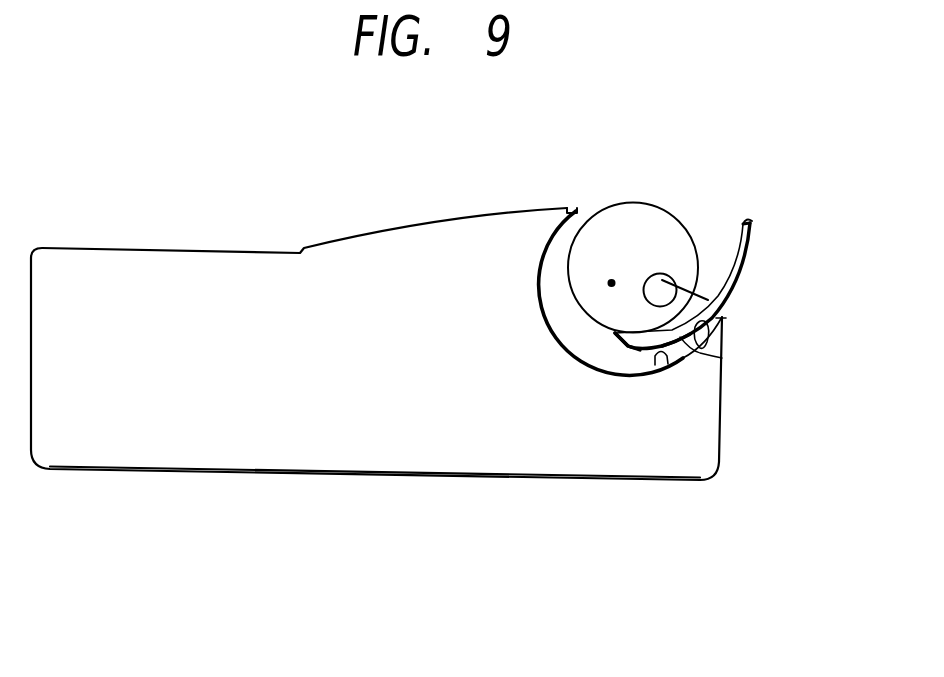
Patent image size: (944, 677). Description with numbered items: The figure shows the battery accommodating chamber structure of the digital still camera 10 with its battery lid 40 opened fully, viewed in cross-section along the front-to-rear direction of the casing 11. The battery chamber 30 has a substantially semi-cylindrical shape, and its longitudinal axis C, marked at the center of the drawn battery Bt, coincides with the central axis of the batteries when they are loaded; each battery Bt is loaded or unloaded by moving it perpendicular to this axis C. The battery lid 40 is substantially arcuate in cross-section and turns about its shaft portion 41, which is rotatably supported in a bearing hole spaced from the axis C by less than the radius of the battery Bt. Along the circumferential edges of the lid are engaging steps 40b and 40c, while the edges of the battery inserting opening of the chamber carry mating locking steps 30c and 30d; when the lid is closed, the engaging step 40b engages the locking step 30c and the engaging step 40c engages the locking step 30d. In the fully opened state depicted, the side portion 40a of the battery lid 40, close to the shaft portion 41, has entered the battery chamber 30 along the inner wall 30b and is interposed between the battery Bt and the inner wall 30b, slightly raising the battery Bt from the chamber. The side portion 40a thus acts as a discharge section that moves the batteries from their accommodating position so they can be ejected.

The digital still camera 10 is at (107, 146).
The casing 11 is at (233, 263).
The battery chamber 30 is at (567, 301).
The inner wall 30b is at (658, 364).
The locking step 30c is at (582, 201).
The locking step 30d is at (710, 354).
The battery lid 40 is at (755, 238).
The side portion 40a is at (683, 353).
The engaging step 40b is at (748, 218).
The engaging step 40c is at (625, 348).
The shaft portion 41 is at (660, 285).
The battery Bt is at (617, 228).
The longitudinal axis C is at (611, 288).